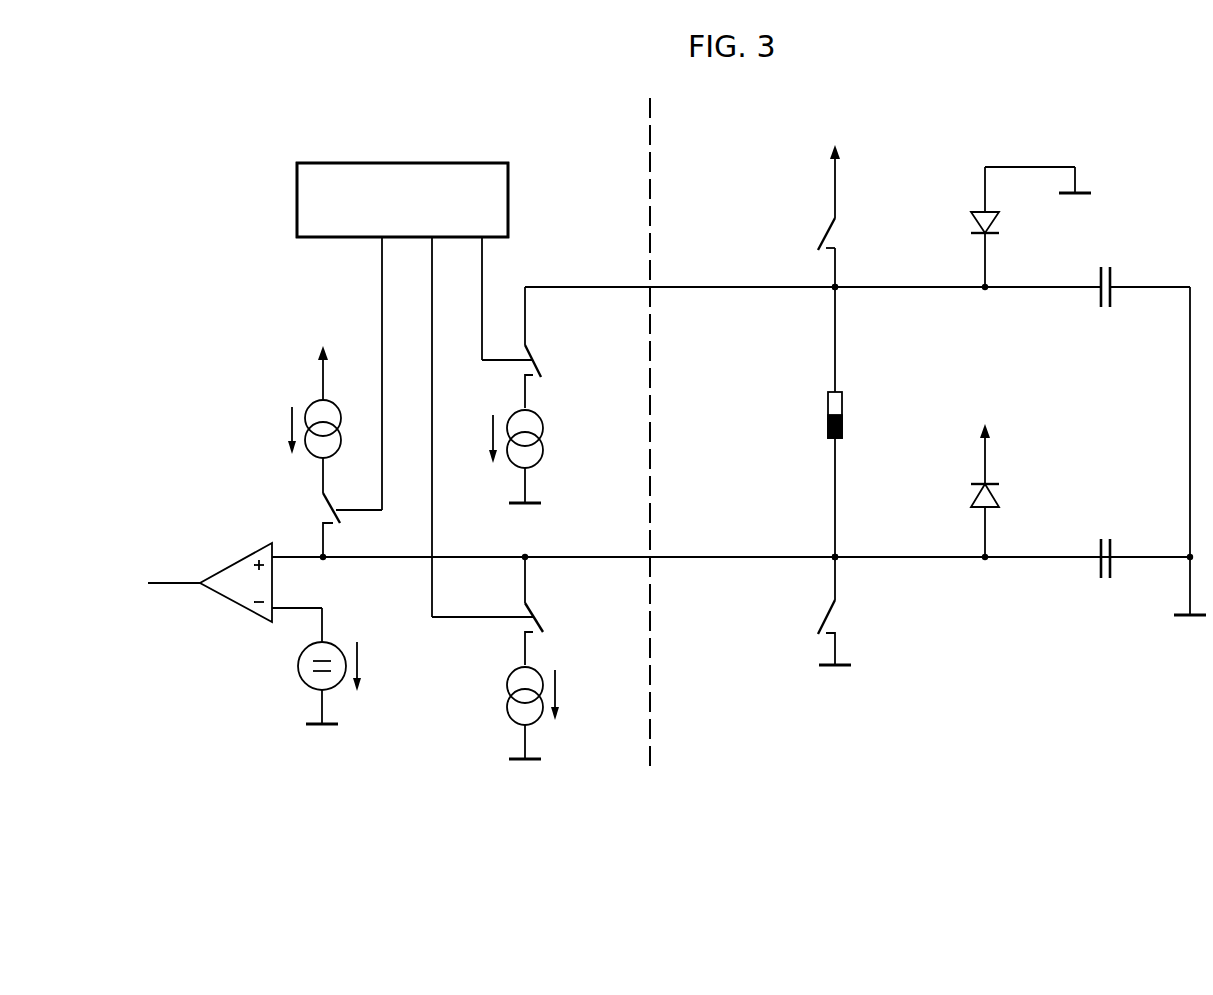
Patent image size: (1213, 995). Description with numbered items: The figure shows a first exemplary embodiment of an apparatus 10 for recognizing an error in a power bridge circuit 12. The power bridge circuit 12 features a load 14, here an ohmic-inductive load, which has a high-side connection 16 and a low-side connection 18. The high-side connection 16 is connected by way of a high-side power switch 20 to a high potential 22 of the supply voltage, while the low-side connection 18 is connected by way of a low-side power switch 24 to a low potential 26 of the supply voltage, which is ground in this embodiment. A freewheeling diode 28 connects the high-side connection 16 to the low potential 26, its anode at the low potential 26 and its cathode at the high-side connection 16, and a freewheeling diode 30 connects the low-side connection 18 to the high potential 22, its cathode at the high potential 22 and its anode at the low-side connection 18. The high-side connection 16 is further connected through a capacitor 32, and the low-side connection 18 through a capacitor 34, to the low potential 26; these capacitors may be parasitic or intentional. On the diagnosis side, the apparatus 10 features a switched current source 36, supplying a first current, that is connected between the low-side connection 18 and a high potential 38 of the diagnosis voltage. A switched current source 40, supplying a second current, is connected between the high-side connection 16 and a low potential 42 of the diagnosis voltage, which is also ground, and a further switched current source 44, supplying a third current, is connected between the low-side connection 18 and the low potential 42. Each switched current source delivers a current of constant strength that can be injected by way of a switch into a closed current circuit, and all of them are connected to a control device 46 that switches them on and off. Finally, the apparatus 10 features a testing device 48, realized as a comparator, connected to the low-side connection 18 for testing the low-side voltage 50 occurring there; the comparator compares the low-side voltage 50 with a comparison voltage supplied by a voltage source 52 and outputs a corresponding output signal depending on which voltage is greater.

The apparatus 10 is at (394, 124).
The power bridge circuit 12 is at (916, 93).
The load 14 is at (827, 405).
The high-side connection 16 is at (840, 292).
The low-side connection 18 is at (840, 553).
The high-side power switch 20 is at (822, 233).
The high potential of the supply voltage 22 is at (828, 152).
The low-side power switch 24 is at (822, 617).
The low potential of the supply voltage 26 is at (826, 672).
The freewheeling diode 28 is at (970, 225).
The freewheeling diode 30 is at (970, 492).
The capacitor 32 is at (1114, 282).
The capacitor 34 is at (1114, 551).
The switched current source 36 is at (262, 469).
The high potential of the diagnosis voltage 38 is at (317, 353).
The switched current source 40 is at (564, 386).
The low potential of the diagnosis voltage 42 is at (317, 730).
The further switched current source 44 is at (564, 640).
The control device 46 is at (297, 200).
The testing device 48 is at (229, 603).
The low-side voltage 50 is at (818, 543).
The voltage source 52 is at (297, 667).